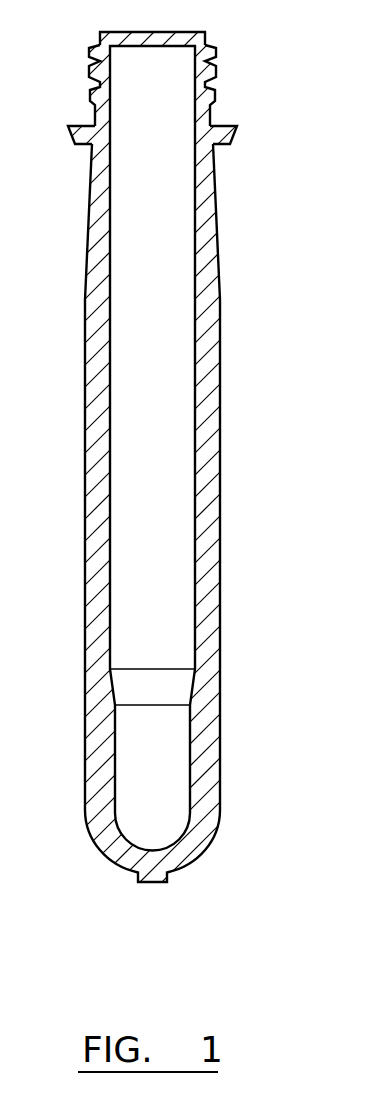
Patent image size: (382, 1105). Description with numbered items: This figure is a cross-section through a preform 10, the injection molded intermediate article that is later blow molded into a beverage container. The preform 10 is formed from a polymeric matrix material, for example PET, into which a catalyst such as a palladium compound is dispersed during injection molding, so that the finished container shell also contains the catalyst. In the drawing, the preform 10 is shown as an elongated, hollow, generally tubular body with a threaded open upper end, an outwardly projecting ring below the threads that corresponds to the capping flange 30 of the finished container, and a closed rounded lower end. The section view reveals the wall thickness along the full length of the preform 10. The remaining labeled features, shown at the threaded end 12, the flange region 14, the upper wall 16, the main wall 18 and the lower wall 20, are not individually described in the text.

The preform 10 is at (191, 500).
The threaded finish 12 is at (210, 58).
The support flange 14 is at (224, 122).
The neck portion 16 is at (216, 182).
The body portion 18 is at (219, 225).
The closed end portion 20 is at (221, 560).
The capping flange 30 is at (377, 615).